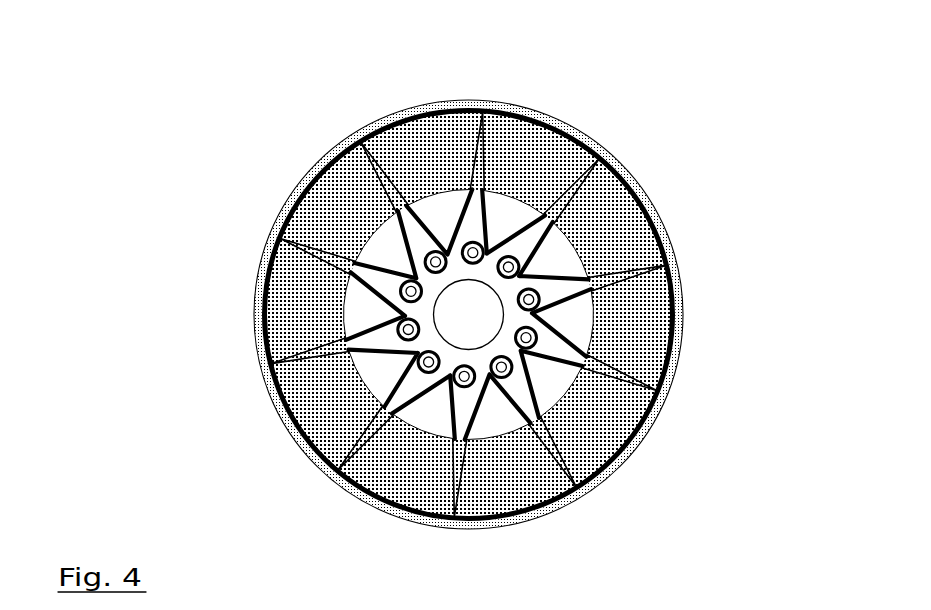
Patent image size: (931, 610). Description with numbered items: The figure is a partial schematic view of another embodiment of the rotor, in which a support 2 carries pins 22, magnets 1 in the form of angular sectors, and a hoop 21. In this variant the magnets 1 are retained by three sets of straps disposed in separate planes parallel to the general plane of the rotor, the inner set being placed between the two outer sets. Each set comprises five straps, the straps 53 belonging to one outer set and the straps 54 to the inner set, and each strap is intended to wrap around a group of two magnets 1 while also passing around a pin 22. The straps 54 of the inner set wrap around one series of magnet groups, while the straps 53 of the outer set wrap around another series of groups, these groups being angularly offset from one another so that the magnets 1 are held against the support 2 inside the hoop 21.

The magnets 1 is at (428, 157).
The support 2 is at (372, 312).
The hoop 21 is at (300, 178).
The pins 22 is at (403, 270).
The straps 53 is at (622, 190).
The straps 54 is at (583, 333).